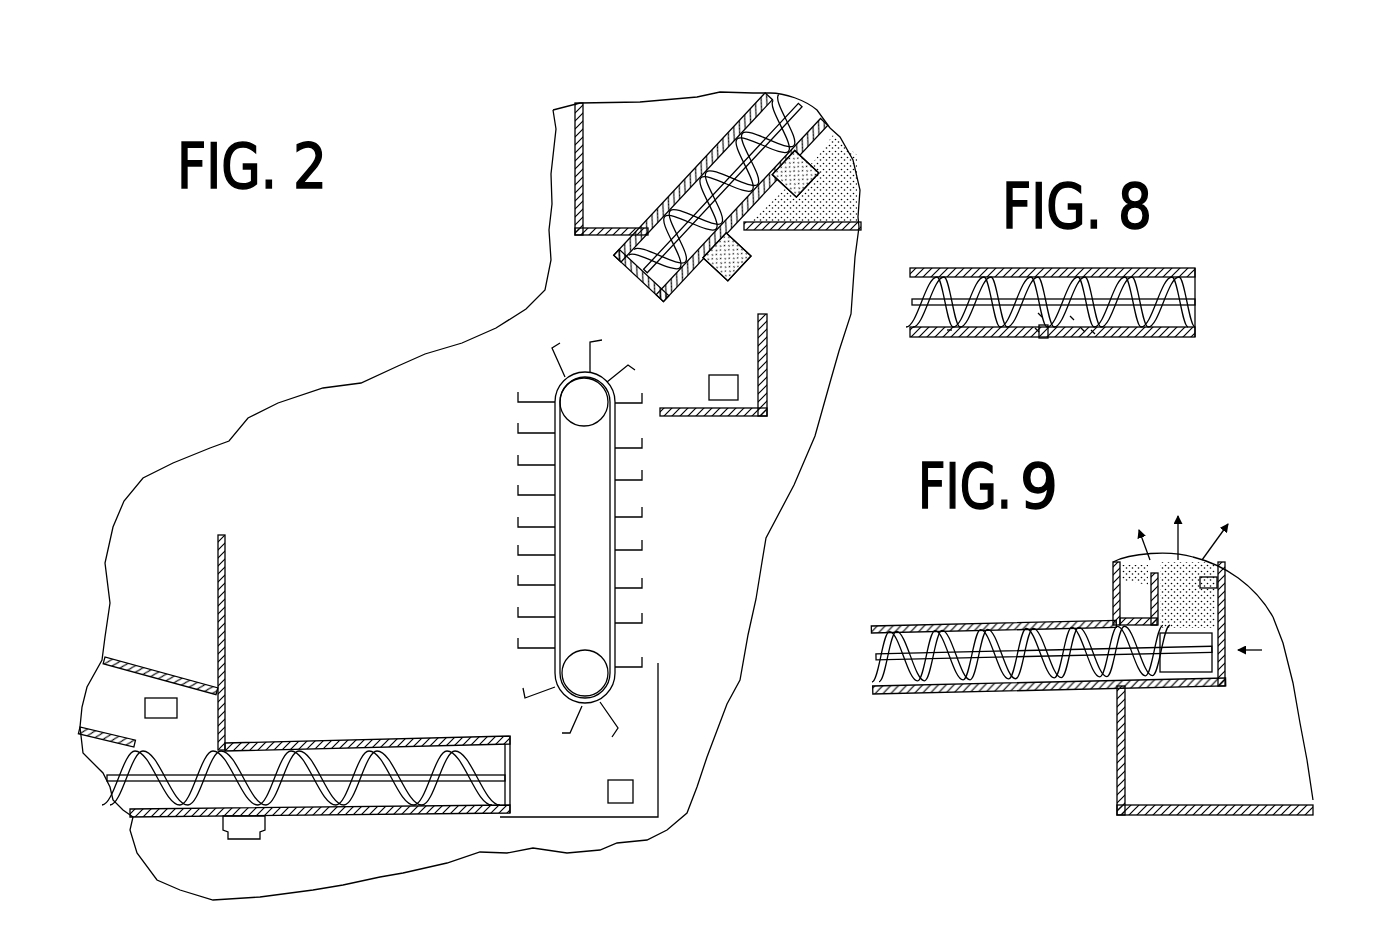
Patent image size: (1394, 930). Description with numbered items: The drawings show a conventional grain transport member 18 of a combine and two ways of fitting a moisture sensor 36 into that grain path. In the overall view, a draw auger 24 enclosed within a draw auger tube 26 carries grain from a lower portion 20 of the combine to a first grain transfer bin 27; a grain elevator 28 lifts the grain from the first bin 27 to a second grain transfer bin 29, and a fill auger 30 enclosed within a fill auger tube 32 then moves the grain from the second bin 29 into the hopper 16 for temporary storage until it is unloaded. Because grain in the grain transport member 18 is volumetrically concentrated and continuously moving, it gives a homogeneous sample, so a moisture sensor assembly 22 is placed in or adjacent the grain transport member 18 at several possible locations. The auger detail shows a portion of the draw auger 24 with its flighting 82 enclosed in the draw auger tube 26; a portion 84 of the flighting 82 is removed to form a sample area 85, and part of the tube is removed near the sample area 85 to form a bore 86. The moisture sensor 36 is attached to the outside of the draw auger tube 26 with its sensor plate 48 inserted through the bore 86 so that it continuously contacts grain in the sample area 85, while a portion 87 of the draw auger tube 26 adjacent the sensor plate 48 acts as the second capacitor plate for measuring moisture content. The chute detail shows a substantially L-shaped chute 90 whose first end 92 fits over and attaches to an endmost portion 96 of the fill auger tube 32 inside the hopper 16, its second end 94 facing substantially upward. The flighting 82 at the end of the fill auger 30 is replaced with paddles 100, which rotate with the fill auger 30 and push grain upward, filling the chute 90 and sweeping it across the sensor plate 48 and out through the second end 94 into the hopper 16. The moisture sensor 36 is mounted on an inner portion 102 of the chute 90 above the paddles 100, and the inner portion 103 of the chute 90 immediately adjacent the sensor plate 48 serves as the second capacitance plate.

In FIG. 2, the hopper 16 is at (623, 137).
In FIG. 9, the hopper 16 is at (1277, 748).
In FIG. 2, the grain transport member 18 is at (413, 338).
In FIG. 2, the lower portion 20 is at (117, 693).
In FIG. 2, the moisture sensor assembly 22 is at (830, 186).
In FIG. 2, the draw auger 24 is at (347, 787).
In FIG. 8, the draw auger 24 is at (1197, 297).
In FIG. 2, the draw auger tube 26 is at (437, 815).
In FIG. 8, the draw auger tube 26 is at (1157, 268).
In FIG. 2, the first grain transfer bin 27 is at (567, 805).
In FIG. 2, the grain elevator 28 is at (630, 535).
In FIG. 2, the second grain transfer bin 29 is at (757, 392).
In FIG. 2, the fill auger 30 is at (732, 184).
In FIG. 9, the fill auger 30 is at (893, 683).
In FIG. 2, the fill auger tube 32 is at (686, 196).
In FIG. 8, the moisture sensor 36 is at (1043, 340).
In FIG. 8, the sensor plate 48 is at (1072, 318).
In FIG. 9, the sensor plate 48 is at (1193, 563).
In FIG. 8, the flighting 82 is at (950, 333).
In FIG. 9, the flighting 82 is at (907, 628).
In FIG. 8, the portion of the flighting 84 is at (1040, 315).
In FIG. 8, the sample area 85 is at (1083, 330).
In FIG. 8, the bore 86 is at (1037, 330).
In FIG. 8, the portion of the draw auger tube 87 is at (1093, 332).
In FIG. 9, the chute 90 is at (1262, 650).
In FIG. 9, the first end 92 is at (1140, 617).
In FIG. 9, the second end 94 is at (1227, 612).
In FIG. 9, the endmost portion 96 is at (1114, 608).
In FIG. 9, the paddles 100 is at (1177, 663).
In FIG. 9, the inner portion 102 is at (1233, 578).
In FIG. 9, the inner portion 103 is at (1227, 633).